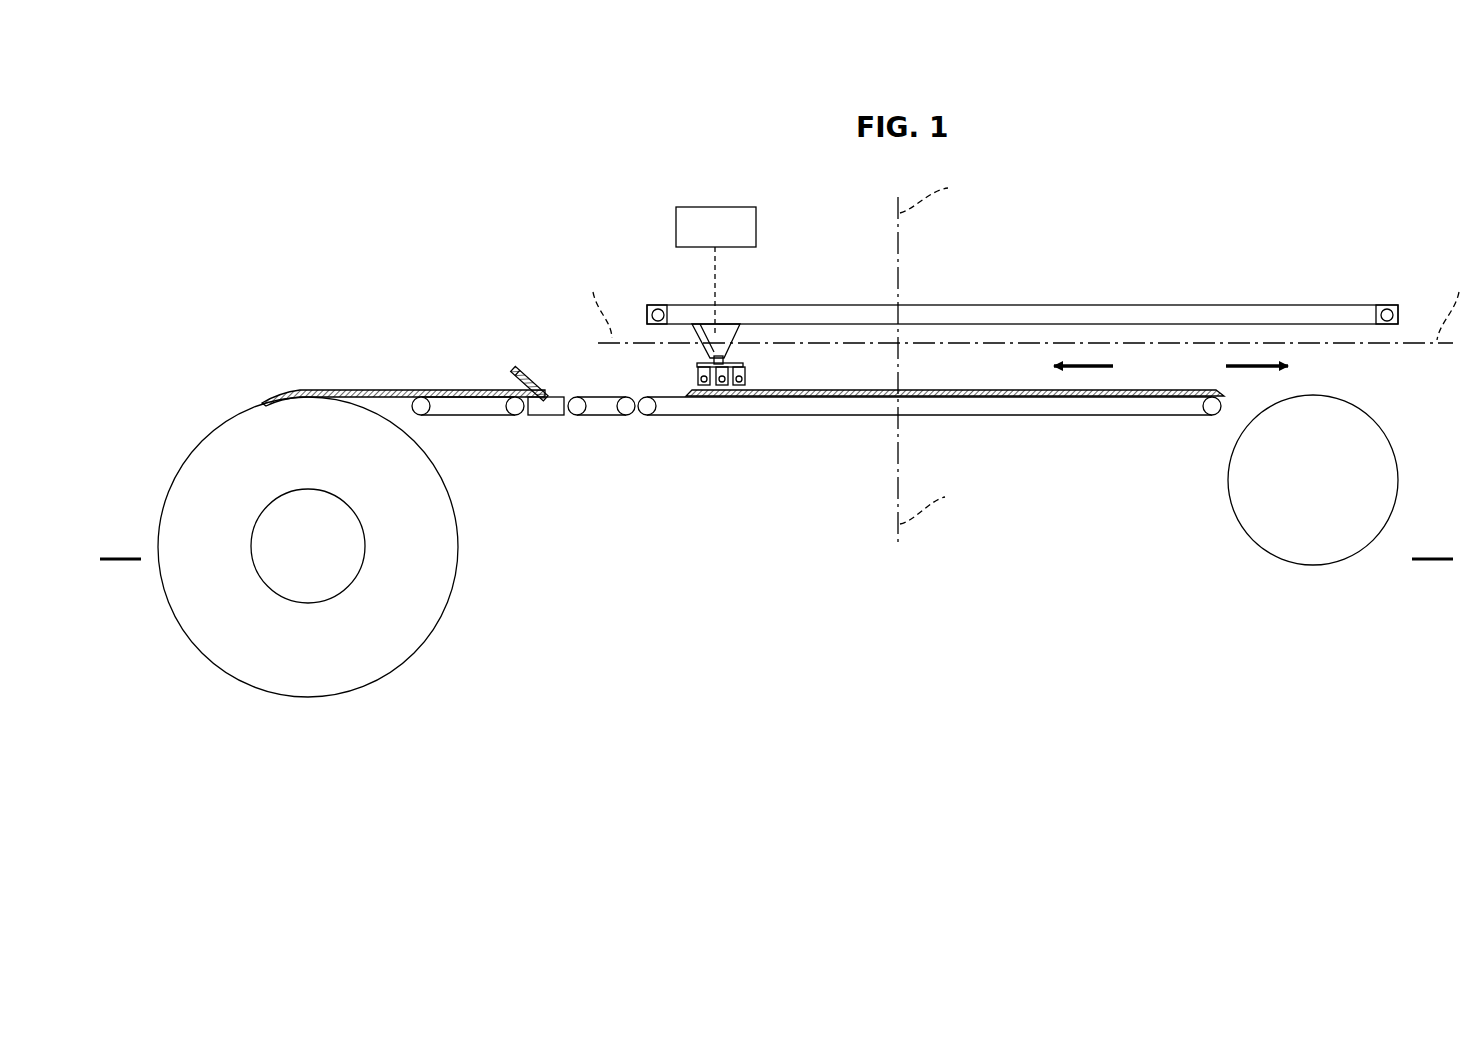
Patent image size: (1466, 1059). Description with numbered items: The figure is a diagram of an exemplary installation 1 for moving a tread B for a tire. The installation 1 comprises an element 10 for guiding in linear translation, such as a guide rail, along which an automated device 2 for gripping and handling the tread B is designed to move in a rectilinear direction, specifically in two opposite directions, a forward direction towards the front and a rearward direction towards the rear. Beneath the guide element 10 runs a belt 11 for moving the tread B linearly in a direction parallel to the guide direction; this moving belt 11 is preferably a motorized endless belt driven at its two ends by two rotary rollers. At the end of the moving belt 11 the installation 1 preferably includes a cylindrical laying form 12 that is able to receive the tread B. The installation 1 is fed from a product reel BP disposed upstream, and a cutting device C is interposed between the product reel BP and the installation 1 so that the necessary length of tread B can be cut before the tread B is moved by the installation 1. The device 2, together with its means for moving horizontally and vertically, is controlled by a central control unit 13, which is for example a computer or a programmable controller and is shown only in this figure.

The installation 1 is at (783, 447).
The automated device 2 is at (717, 357).
The element for guiding in linear translation 10 is at (1048, 312).
The belt 11 is at (853, 410).
The cylindrical laying form 12 is at (1313, 545).
The central control unit 13 is at (726, 237).
The product reel BP is at (433, 546).
The tread B is at (1001, 396).
The cutting device C is at (531, 372).